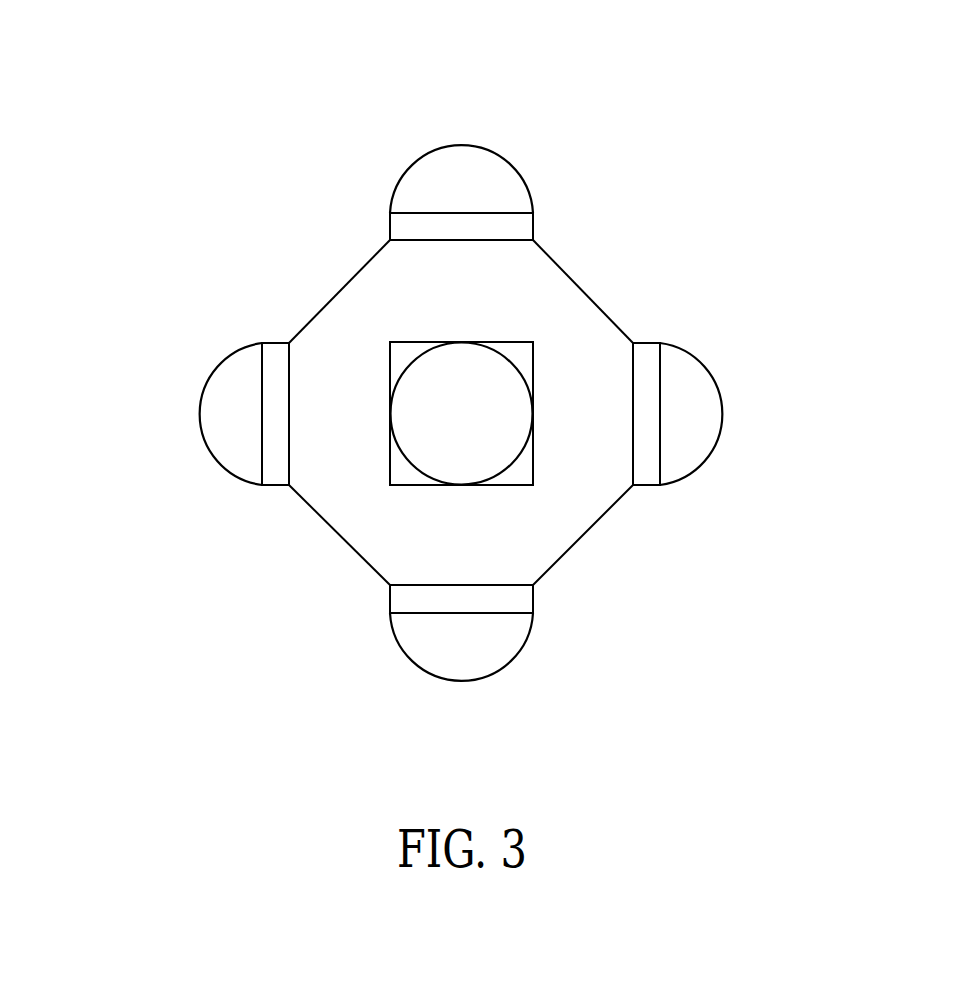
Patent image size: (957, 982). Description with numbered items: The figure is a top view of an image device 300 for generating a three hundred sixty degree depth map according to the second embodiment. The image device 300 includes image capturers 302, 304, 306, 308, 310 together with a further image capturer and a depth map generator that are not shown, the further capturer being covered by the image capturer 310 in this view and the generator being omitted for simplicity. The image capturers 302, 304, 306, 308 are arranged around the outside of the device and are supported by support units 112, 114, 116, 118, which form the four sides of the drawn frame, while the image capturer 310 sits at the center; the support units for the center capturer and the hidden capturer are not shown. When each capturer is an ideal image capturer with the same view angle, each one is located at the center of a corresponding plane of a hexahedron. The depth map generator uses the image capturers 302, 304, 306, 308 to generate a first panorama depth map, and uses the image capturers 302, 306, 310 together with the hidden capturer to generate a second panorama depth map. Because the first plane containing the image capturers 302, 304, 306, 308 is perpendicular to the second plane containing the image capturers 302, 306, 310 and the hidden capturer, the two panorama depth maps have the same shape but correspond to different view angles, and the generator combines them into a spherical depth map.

The image device 300 is at (797, 106).
The image capturer 302 is at (505, 160).
The image capturer 304 is at (198, 380).
The image capturer 306 is at (517, 655).
The image capturer 308 is at (728, 400).
The image capturer 310 is at (505, 341).
The support unit 112 is at (340, 290).
The support unit 114 is at (339, 537).
The support unit 116 is at (582, 537).
The support unit 118 is at (583, 290).